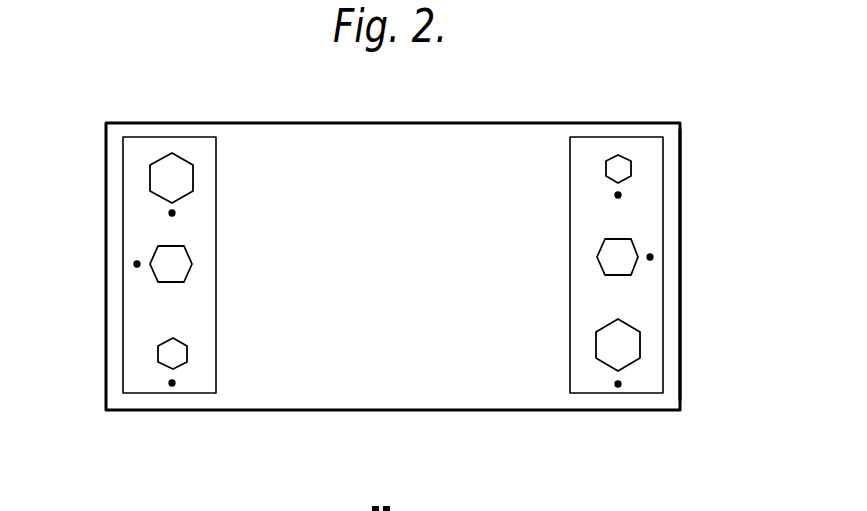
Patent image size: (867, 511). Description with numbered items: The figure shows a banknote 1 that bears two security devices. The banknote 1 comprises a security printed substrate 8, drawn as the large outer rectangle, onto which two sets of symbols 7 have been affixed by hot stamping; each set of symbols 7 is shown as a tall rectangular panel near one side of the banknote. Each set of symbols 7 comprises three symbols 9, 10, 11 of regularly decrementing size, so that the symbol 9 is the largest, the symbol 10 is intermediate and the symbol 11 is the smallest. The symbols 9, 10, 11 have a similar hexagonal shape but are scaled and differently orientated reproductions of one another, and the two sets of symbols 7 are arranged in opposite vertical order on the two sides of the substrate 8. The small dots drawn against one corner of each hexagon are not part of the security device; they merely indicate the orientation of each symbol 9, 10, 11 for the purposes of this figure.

The banknote 1 is at (680, 148).
The set of symbols 7 is at (216, 197).
The security printed substrate 8 is at (663, 183).
The symbol 9 is at (150, 173).
The symbol 10 is at (155, 275).
The symbol 11 is at (158, 357).